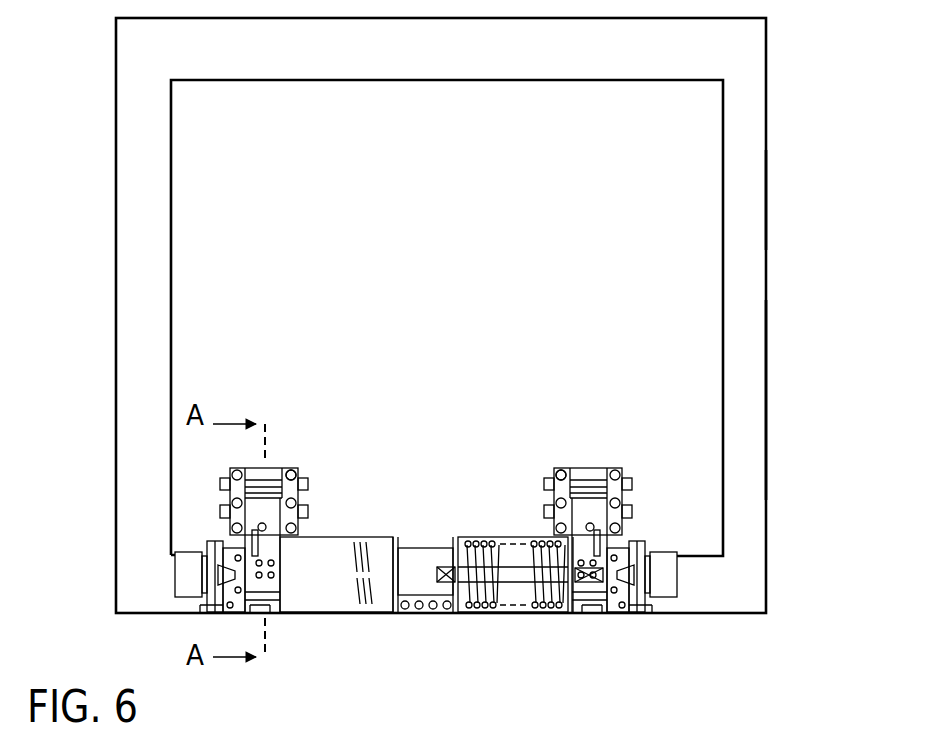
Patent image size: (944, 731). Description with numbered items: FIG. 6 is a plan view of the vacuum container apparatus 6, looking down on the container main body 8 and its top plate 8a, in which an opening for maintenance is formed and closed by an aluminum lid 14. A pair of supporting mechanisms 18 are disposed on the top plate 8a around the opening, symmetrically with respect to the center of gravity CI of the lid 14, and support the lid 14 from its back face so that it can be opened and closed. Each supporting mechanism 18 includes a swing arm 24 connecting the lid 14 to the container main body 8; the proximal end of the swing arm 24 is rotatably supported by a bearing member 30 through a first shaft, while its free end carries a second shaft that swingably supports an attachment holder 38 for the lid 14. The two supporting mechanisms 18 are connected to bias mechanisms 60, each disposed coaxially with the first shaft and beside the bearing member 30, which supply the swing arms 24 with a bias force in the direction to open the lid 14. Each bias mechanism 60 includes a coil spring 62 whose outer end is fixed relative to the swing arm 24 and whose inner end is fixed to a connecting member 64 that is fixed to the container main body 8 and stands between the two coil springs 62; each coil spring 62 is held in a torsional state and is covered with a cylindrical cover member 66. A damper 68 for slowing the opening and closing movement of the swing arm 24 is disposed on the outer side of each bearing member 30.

The processing apparatus 6 is at (778, 279).
The container main body 8 is at (747, 187).
The top plate 8a is at (743, 392).
The lid 14 is at (705, 123).
The center of gravity CI is at (443, 318).
The supporting mechanism 18 is at (318, 468).
The swing arm 24 is at (258, 468).
The bearing member 30 is at (232, 547).
The attachment holder 38 is at (290, 458).
The bias mechanism 60 is at (441, 591).
The coil spring 62 is at (373, 594).
The connecting member 64 is at (420, 548).
The cover member 66 is at (341, 536).
The damper 68 is at (185, 580).